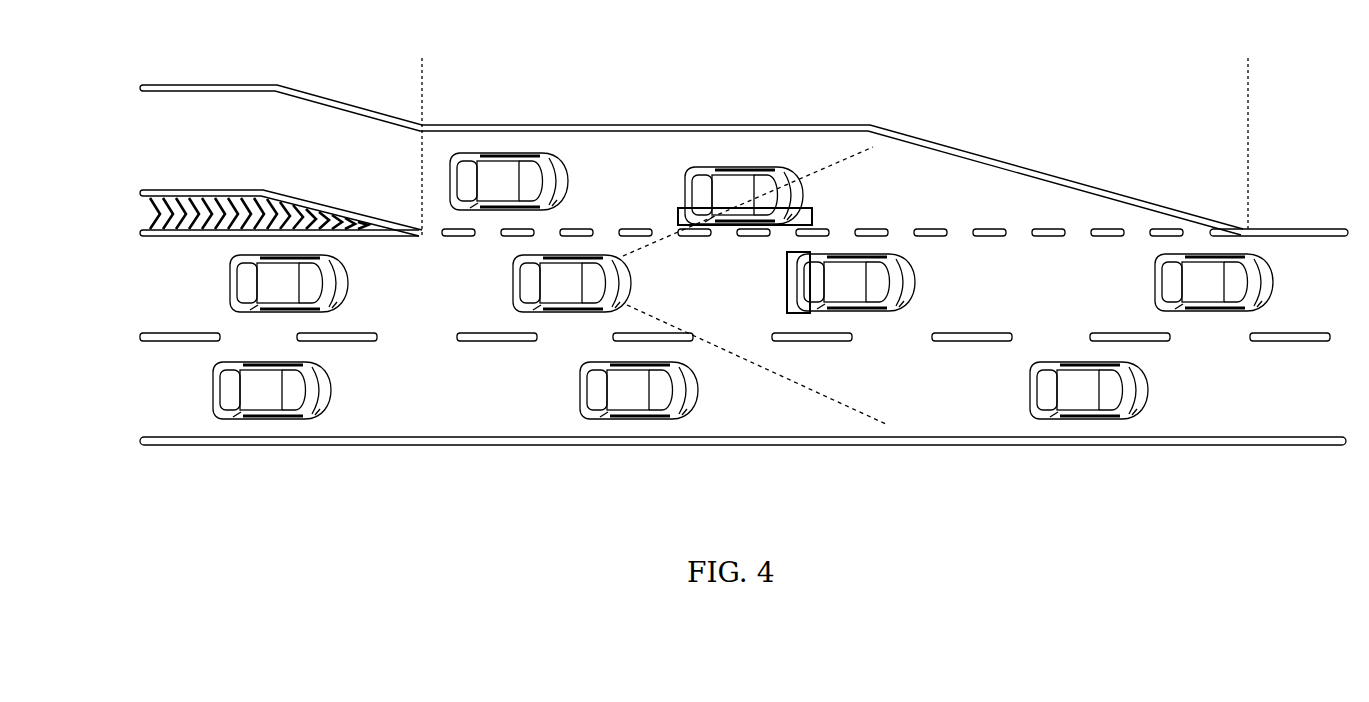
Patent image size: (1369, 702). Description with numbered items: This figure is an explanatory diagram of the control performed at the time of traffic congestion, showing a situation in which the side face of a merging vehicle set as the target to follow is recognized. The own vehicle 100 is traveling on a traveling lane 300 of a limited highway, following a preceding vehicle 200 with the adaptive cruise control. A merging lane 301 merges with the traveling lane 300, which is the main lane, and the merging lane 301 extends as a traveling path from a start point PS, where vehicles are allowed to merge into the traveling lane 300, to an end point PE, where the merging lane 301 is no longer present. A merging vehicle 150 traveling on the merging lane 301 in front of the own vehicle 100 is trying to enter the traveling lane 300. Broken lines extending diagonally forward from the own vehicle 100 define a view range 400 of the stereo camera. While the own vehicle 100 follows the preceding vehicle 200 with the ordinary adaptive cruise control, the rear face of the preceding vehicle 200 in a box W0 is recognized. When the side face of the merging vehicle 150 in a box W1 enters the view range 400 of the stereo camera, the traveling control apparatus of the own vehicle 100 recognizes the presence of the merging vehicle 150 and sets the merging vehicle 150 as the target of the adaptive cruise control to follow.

The own vehicle 100 is at (512, 290).
The merging vehicle 150 is at (710, 178).
The preceding vehicle 200 is at (915, 287).
The traveling lane 300 is at (170, 291).
The merging lane 301 is at (802, 148).
The view range 400 is at (733, 330).
The box W1 is at (817, 218).
The box W0 is at (802, 313).
The start point PS is at (422, 136).
The end point PE is at (1248, 133).